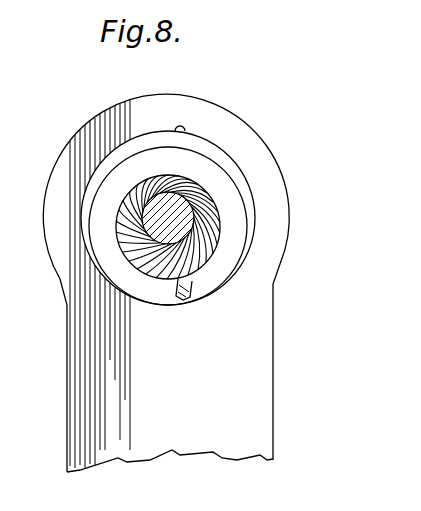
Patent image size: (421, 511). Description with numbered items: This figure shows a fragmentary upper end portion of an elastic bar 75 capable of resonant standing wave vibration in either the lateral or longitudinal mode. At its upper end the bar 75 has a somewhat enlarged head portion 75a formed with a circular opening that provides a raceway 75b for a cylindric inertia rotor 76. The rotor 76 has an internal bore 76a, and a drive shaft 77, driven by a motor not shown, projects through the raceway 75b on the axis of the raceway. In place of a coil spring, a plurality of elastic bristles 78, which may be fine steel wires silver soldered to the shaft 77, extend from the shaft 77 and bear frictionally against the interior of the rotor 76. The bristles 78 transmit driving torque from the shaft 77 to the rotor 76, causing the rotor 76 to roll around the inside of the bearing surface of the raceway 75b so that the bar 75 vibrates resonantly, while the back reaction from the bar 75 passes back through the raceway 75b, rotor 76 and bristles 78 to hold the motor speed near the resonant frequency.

The elastic bar 75 is at (273, 364).
The enlarged head portion 75a is at (258, 131).
The raceway 75b is at (183, 132).
The cylindric inertia rotor 76 is at (228, 184).
The internal bore 76a is at (215, 213).
The drive shaft 77 is at (176, 224).
The elastic bristles 78 is at (180, 283).